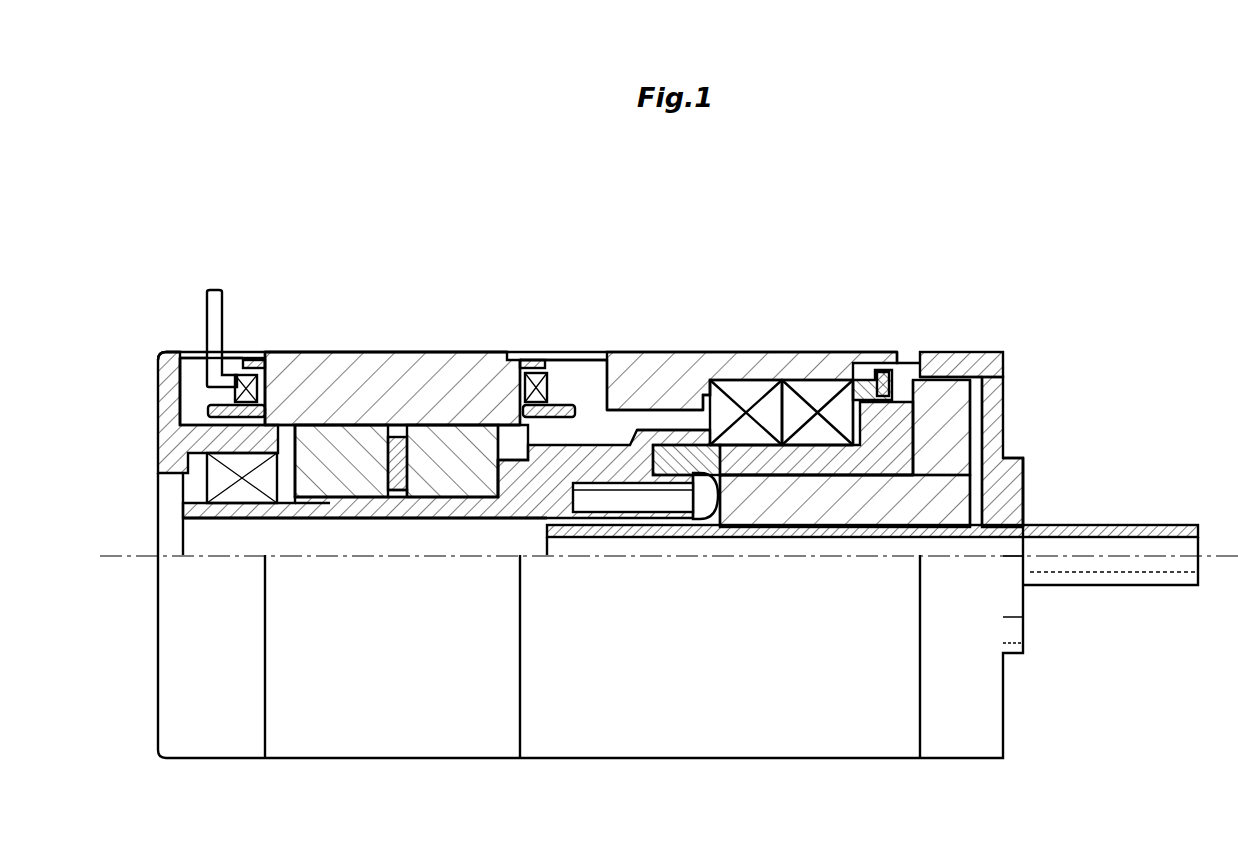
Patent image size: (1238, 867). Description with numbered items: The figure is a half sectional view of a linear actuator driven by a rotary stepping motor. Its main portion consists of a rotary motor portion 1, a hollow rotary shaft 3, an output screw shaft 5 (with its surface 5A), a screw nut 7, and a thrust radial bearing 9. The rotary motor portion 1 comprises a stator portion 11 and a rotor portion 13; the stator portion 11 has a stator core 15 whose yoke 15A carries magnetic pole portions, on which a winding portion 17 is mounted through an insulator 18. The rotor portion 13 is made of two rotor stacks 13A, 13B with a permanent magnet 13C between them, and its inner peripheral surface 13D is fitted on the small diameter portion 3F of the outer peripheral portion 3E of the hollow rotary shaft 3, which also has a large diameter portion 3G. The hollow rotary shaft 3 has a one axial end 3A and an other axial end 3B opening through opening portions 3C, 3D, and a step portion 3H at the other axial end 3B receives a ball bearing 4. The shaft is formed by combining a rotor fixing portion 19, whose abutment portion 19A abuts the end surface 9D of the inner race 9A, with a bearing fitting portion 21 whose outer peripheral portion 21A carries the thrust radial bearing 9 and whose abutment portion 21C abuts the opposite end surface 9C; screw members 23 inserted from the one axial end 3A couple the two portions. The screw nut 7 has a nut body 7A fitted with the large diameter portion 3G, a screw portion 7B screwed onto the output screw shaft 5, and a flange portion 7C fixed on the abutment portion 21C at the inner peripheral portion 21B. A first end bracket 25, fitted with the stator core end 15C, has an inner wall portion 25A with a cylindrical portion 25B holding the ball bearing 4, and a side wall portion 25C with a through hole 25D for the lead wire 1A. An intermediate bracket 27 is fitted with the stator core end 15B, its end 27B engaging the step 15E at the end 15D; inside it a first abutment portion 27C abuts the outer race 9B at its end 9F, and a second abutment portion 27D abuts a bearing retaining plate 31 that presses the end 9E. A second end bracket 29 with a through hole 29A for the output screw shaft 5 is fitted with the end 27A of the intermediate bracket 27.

The rotary motor portion 1 is at (321, 345).
The lead wire 1A is at (207, 300).
The hollow rotary shaft 3 is at (616, 435).
The one axial end 3A is at (985, 356).
The other axial end 3B is at (210, 475).
The opening portion 3C is at (978, 458).
The opening portion 3D is at (185, 518).
The outer peripheral portion 3E is at (470, 512).
The small diameter portion 3F is at (333, 505).
The large diameter portion 3G is at (835, 500).
The step portion 3H is at (280, 500).
The ball bearing 4 is at (200, 432).
The output screw shaft 5 is at (1190, 525).
The shaft surface 5A is at (1115, 525).
The screw nut 7 is at (950, 490).
The nut body 7A is at (745, 482).
The screw portion 7B is at (860, 482).
The flange portion 7C is at (965, 395).
The thrust radial bearing 9 is at (820, 385).
The inner race 9A is at (775, 470).
The outer race 9B is at (790, 380).
The end surface 9C is at (880, 462).
The end surface 9D is at (690, 470).
The end 9E is at (860, 385).
The end 9F is at (713, 505).
The stator portion 11 is at (405, 380).
The rotor portion 13 is at (318, 500).
The rotor stack 13A is at (345, 490).
The rotor stack 13B is at (455, 490).
The permanent magnet 13C is at (400, 497).
The inner peripheral surface 13D is at (290, 482).
The stator core 15 is at (345, 360).
The yoke 15A is at (376, 352).
The end 15B is at (445, 352).
The end 15C is at (298, 352).
The end 15D is at (505, 405).
The step 15E is at (520, 458).
The winding portion 17 is at (245, 376).
The insulator 18 is at (255, 362).
The rotor fixing portion 19 is at (398, 492).
The abutment portion 19A is at (700, 420).
The bearing fitting portion 21 is at (796, 490).
The outer peripheral portion 21A is at (760, 352).
The inner peripheral portion 21B is at (958, 496).
The abutment portion 21C is at (930, 378).
The screw member 23 is at (615, 495).
The first end bracket 25 is at (182, 378).
The inner wall portion 25A is at (165, 360).
The cylindrical portion 25B is at (215, 410).
The side wall portion 25C is at (176, 353).
The through hole 25D is at (212, 352).
The intermediate bracket 27 is at (660, 380).
The end 27A is at (905, 358).
The end 27B is at (527, 364).
The first abutment portion 27C is at (690, 405).
The second abutment portion 27D is at (885, 368).
The second end bracket 29 is at (993, 410).
The through hole 29A is at (1023, 527).
The bearing retaining plate 31 is at (883, 372).